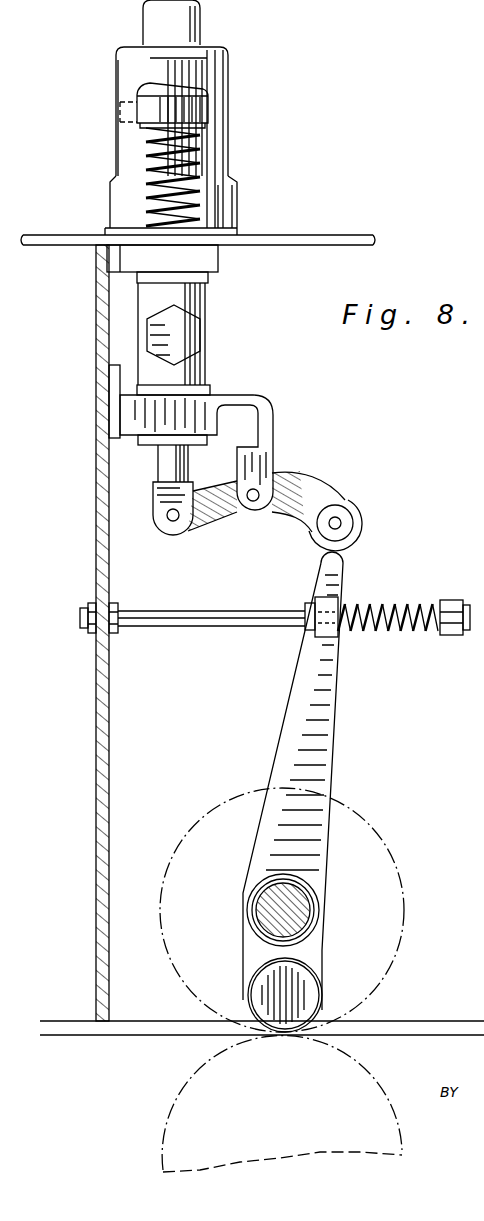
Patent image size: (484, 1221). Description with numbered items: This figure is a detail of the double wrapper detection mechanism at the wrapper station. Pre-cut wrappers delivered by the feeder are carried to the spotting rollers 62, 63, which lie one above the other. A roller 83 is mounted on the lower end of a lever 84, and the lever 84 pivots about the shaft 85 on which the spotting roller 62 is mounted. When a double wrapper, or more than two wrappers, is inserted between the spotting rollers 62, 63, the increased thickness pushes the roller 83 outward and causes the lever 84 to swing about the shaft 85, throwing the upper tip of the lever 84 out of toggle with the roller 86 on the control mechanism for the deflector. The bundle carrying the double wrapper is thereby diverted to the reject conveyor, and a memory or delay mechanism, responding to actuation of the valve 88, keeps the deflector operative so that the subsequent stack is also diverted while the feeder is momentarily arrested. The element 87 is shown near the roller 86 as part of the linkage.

The spotting roller 62 is at (395, 890).
The spotting roller 63 is at (197, 1072).
The roller 83 is at (307, 993).
The lever 84 is at (295, 705).
The shaft 85 is at (268, 898).
The roller 86 is at (362, 518).
The link arm 87 is at (322, 481).
The valve 88 is at (200, 332).